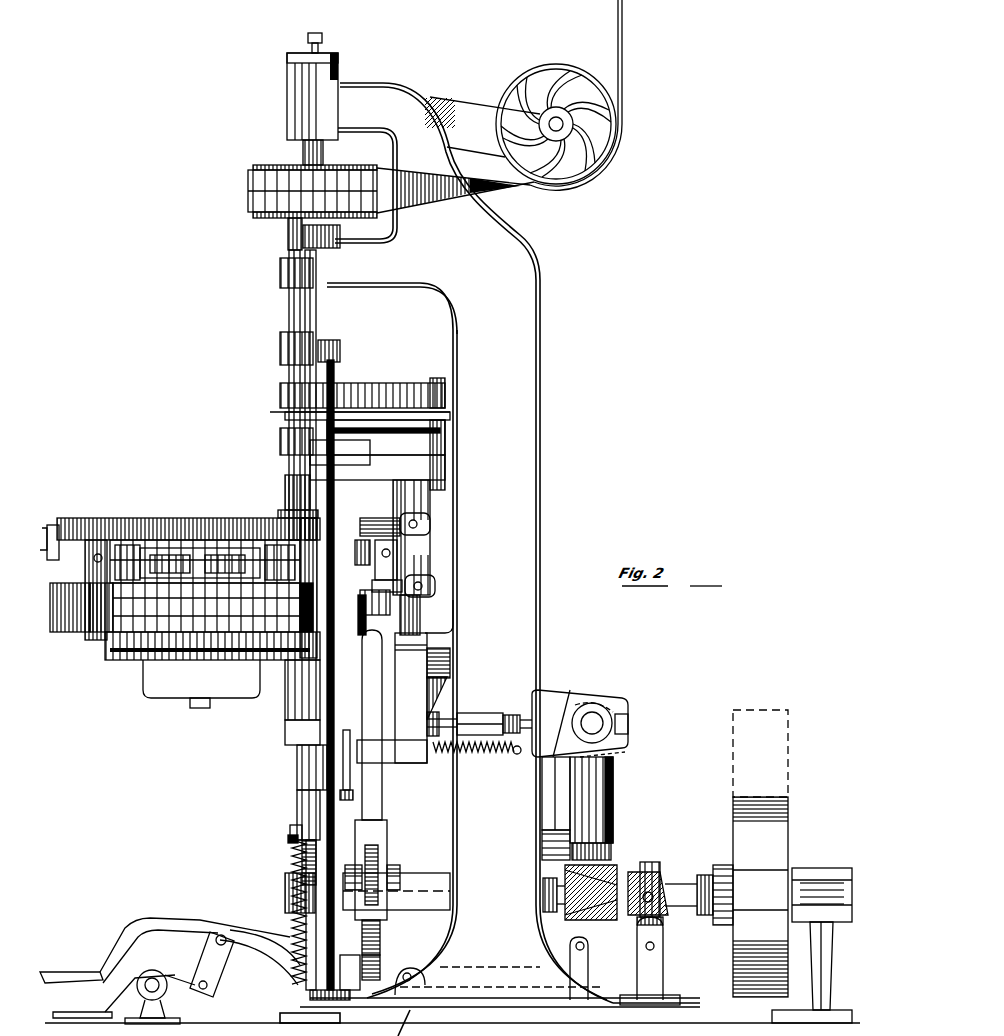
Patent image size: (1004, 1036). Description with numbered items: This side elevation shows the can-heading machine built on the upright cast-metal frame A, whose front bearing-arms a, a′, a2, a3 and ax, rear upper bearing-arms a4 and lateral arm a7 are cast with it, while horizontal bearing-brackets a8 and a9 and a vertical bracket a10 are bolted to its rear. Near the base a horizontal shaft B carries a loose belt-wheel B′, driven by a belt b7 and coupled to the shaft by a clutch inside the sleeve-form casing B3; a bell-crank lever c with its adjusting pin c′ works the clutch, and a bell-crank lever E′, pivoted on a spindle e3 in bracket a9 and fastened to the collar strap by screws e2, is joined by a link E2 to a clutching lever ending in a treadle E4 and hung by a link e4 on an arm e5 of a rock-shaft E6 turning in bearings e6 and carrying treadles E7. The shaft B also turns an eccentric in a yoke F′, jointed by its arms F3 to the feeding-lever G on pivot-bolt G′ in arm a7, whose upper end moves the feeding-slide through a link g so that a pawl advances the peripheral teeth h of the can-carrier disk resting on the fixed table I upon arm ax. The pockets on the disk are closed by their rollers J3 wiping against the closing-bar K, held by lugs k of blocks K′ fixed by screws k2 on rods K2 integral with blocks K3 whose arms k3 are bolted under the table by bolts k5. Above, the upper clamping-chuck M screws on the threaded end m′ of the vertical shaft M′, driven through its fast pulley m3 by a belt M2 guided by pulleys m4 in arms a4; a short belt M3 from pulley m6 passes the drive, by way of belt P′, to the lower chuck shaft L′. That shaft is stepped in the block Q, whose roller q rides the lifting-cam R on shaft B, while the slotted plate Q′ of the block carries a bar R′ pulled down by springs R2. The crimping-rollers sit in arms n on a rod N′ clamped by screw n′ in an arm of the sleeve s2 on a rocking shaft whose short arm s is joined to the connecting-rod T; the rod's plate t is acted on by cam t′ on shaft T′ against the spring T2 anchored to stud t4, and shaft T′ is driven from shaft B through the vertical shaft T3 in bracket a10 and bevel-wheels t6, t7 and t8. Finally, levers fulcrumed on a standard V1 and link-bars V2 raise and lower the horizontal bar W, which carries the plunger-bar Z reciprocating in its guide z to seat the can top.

The upright frame A is at (452, 559).
The front bearing-arm a is at (287, 72).
The front bearing-arm a′ is at (340, 236).
The front bearing-arm a2 is at (420, 446).
The front bearing-arm a3 is at (402, 482).
The rear upper bearing-arm a4 is at (482, 112).
The lateral bearing-arm a7 is at (440, 702).
The horizontal bearing-bracket a8 is at (555, 757).
The horizontal bearing-bracket a9 is at (665, 972).
The vertical bracket a10 is at (614, 782).
The front bearing-arm ax is at (455, 635).
The horizontal shaft B is at (343, 872).
The loose belt-wheel B′ is at (770, 797).
The sleeve-form casing B3 is at (780, 945).
The pulley outline b7 is at (760, 753).
The bell-crank lever c is at (707, 865).
The screw-threaded pin c′ is at (725, 860).
The bell-crank lever E′ is at (645, 862).
The link E2 is at (588, 970).
The treadle E4 is at (65, 972).
The rock-shaft E6 is at (152, 980).
The treadle E7 is at (65, 1012).
The screw e2 is at (653, 903).
The spindle e3 is at (665, 948).
The link e4 is at (232, 968).
The arm e5 is at (220, 985).
The bearing e6 is at (160, 990).
The yoke F′ is at (386, 940).
The link F3 is at (395, 968).
The feeding-lever G is at (382, 792).
The pivot-bolt G′ is at (350, 765).
The link g is at (383, 698).
The peripheral teeth h is at (58, 590).
The table I is at (130, 650).
The antifriction-roller J3 is at (52, 525).
The closing-bar K is at (205, 545).
The block K′ is at (110, 548).
The vertical rod K2 is at (100, 525).
The block K3 is at (295, 705).
The supporting-lug k is at (145, 545).
The adjusting-screw k2 is at (95, 555).
The horizontal arm k3 is at (112, 645).
The bolt k5 is at (275, 648).
The vertical shaft L′ is at (290, 745).
The upper clamping-chuck M is at (290, 492).
The vertical shaft M′ is at (323, 153).
The driving-belt M2 is at (258, 194).
The short belt M3 is at (392, 382).
The threaded lower end m′ is at (365, 552).
The fast pulley m3 is at (255, 166).
The guide pulley m4 is at (552, 66).
The pulley m6 is at (340, 380).
The vertical rod N′ is at (380, 568).
The bracket n is at (382, 518).
The screw n′ is at (388, 553).
The belt P′ is at (300, 760).
The vertically-movable block Q is at (302, 800).
The slotted plate Q′ is at (298, 838).
The antifriction-roller q is at (292, 866).
The lifting-cam R is at (285, 893).
The horizontal bar R′ is at (300, 828).
The retracting-spring R2 is at (292, 848).
The short arm s is at (420, 616).
The sleeve s2 is at (432, 556).
The connecting-rod T is at (490, 716).
The transverse shaft T′ is at (612, 712).
The retracting-spring T2 is at (473, 762).
The vertical connecting-shaft T3 is at (575, 852).
The plate t is at (580, 723).
The cam t′ is at (633, 724).
The stud t4 is at (518, 755).
The bevel-wheel t6 is at (615, 752).
The bevel-wheel t7 is at (617, 870).
The bevel-wheel t8 is at (630, 872).
The block V1 is at (351, 961).
The link-bar V2 is at (350, 460).
The horizontal bar W is at (280, 350).
The plunger-bar Z is at (288, 312).
The guide z is at (280, 270).